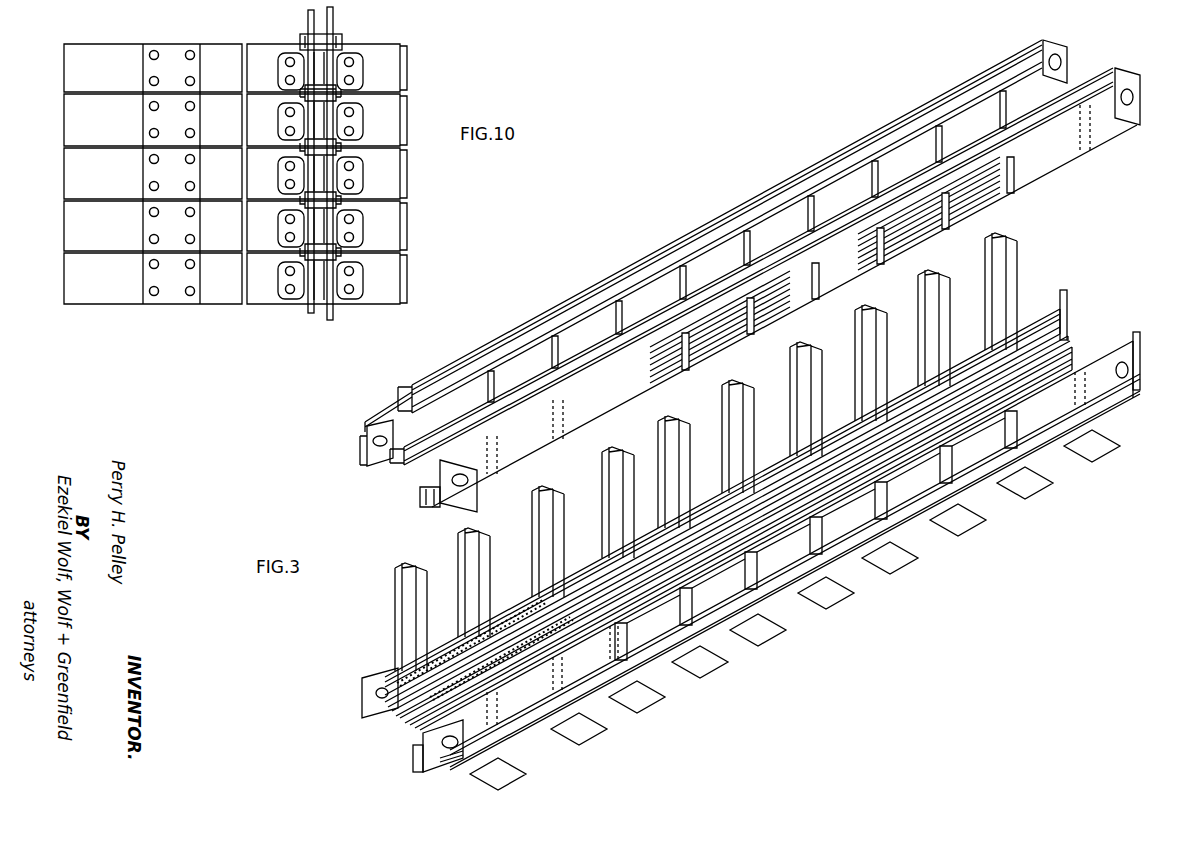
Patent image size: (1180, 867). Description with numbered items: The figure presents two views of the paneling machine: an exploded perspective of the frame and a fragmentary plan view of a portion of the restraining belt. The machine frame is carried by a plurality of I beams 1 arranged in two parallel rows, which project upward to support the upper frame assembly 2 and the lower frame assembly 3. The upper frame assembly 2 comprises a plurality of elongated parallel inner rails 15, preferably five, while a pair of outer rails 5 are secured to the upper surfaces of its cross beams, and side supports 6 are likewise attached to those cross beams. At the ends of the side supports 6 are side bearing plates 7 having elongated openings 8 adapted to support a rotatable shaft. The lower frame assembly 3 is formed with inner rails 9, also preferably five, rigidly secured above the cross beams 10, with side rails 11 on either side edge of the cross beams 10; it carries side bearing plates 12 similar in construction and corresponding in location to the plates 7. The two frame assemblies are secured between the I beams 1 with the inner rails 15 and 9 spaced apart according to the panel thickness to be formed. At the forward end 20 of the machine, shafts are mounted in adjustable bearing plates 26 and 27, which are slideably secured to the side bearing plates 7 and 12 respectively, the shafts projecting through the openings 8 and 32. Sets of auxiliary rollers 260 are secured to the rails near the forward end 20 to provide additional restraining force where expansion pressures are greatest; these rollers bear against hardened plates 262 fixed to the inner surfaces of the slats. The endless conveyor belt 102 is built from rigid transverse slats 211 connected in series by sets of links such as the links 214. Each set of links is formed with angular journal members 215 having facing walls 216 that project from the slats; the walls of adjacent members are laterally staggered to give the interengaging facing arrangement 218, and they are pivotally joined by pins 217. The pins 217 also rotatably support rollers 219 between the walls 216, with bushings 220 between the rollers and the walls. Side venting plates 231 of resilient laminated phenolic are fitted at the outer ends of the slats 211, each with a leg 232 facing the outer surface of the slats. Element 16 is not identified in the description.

In FIG. 3, the I beams 1 is at (1017, 264).
In FIG. 3, the upper frame assembly 2 is at (751, 252).
In FIG. 3, the lower frame assembly 3 is at (764, 535).
In FIG. 3, the outer rails 5 is at (600, 346).
In FIG. 3, the side supports 6 is at (779, 184).
In FIG. 3, the side bearing plates 7 is at (384, 418).
In FIG. 3, the elongated openings 8 is at (377, 438).
In FIG. 3, the inner rails 9 is at (783, 486).
In FIG. 3, the cross beams 10 is at (822, 535).
In FIG. 3, the side rails 11 is at (741, 543).
In FIG. 3, the side bearing plates 12 is at (1060, 318).
In FIG. 3, the inner rails 15 is at (720, 256).
In FIG. 3, the end connection 16 is at (1107, 52).
In FIG. 3, the forward end 20 is at (719, 277).
In FIG. 3, the adjustable bearing plate 26 is at (420, 494).
In FIG. 3, the adjustable bearing plate 27 is at (415, 753).
In FIG. 3, the opening 32 is at (452, 763).
In FIG. 3, the auxiliary rollers 260 is at (445, 680).
In FIG. 10, the transverse slats 211 is at (117, 46).
In FIG. 10, the plates 262 is at (178, 50).
In FIG. 10, the endless conveyor belt 102 is at (353, 162).
In FIG. 10, the set of links 214 is at (336, 20).
In FIG. 10, the angular journal members 215 is at (288, 300).
In FIG. 10, the facing walls 216 is at (314, 300).
In FIG. 10, the pins 217 is at (342, 193).
In FIG. 10, the interengaging facing arrangement 218 is at (300, 248).
In FIG. 10, the rollers 219 is at (305, 183).
In FIG. 10, the bushings 220 is at (300, 41).
In FIG. 10, the side venting plates 231 is at (410, 76).
In FIG. 10, the leg 232 is at (405, 88).